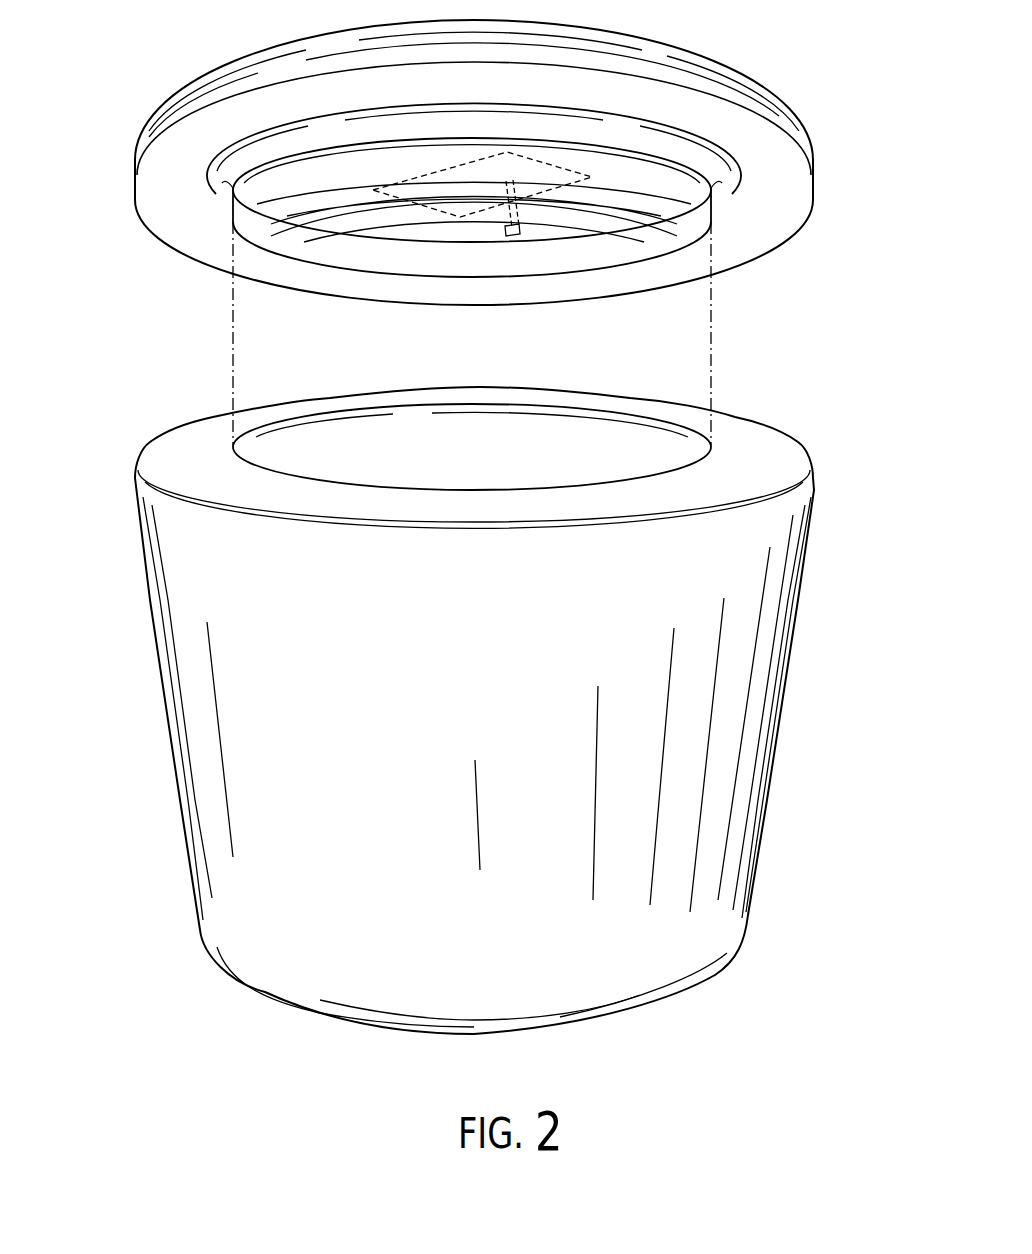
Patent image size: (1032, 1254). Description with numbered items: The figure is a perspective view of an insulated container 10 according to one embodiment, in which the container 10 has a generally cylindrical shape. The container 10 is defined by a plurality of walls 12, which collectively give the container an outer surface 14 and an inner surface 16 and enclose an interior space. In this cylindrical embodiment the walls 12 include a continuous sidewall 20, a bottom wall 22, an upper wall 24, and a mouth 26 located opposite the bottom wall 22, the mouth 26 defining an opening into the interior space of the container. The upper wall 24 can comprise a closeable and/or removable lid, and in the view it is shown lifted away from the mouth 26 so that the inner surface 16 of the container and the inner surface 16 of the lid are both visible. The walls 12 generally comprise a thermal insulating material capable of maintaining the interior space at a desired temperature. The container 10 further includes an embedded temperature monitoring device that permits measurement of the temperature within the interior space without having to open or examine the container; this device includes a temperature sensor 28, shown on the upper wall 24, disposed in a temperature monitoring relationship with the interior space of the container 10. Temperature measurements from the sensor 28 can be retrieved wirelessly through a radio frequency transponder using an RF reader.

The insulated container 10 is at (468, 652).
The walls 12 is at (715, 62).
The outer surface 14 is at (478, 656).
The inner surface 16 is at (357, 206).
The sidewall 20 is at (172, 560).
The bottom wall 22 is at (637, 1010).
The upper wall 24 is at (783, 187).
The mouth 26 is at (626, 452).
The temperature sensor 28 is at (518, 235).